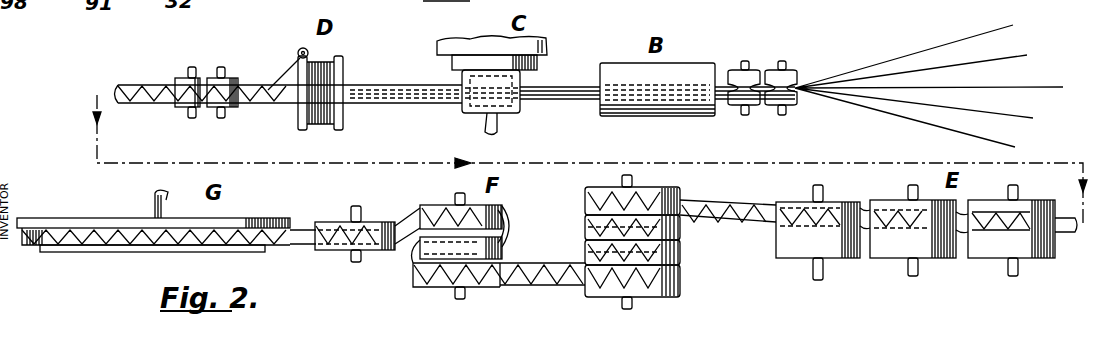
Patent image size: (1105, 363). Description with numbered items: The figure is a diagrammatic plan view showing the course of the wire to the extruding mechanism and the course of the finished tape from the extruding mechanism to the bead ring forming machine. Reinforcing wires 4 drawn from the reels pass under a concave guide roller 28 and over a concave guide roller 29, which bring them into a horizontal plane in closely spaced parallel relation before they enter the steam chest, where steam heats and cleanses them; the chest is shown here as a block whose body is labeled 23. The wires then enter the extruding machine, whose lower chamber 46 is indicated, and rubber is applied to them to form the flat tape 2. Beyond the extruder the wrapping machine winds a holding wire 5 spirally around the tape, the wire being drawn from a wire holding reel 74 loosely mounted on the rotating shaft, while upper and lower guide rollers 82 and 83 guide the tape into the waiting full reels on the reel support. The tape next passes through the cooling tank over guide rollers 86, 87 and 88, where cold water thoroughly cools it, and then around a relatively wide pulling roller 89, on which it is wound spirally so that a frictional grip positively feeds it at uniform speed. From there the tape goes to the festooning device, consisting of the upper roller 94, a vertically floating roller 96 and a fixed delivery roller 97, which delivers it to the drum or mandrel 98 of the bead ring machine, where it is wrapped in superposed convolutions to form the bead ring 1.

The bead ring 1 is at (30, 248).
The flat tape 2 is at (282, 243).
The reinforcing wires 4 is at (566, 86).
The holding wire 5 is at (148, 103).
The drafting box 23 is at (665, 108).
The concave guide roller 28 is at (795, 76).
The concave guide roller 29 is at (755, 72).
The condenser chamber 46 is at (518, 113).
The wire holding reel 74 is at (345, 63).
The upper guide roller 82 is at (183, 80).
The lower guide roller 83 is at (234, 79).
The guide roller 86 is at (996, 258).
The guide roller 87 is at (797, 258).
The roller 88 is at (901, 258).
The pulling roller 89 is at (603, 297).
The upper roller 94 is at (420, 215).
The floating roller 96 is at (505, 246).
The fixed delivery roller 97 is at (378, 252).
The drum or mandrel 98 is at (98, 252).